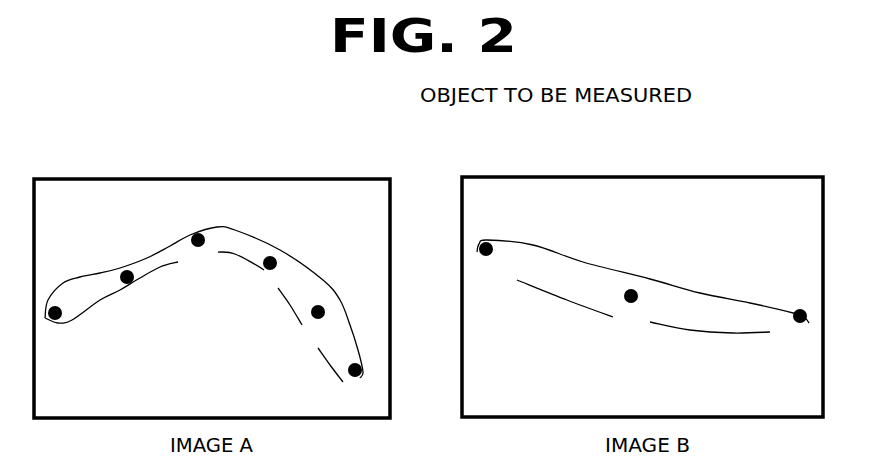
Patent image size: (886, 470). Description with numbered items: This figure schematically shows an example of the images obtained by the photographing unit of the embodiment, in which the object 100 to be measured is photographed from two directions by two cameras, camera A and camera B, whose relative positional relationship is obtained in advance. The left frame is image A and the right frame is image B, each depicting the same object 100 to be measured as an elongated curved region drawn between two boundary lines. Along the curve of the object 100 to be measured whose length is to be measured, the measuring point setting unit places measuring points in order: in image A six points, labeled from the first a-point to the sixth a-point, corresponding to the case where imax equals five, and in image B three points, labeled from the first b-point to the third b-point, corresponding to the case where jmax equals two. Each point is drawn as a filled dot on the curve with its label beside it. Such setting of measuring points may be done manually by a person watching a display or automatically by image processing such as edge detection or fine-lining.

The object to be measured 100 is at (546, 248).